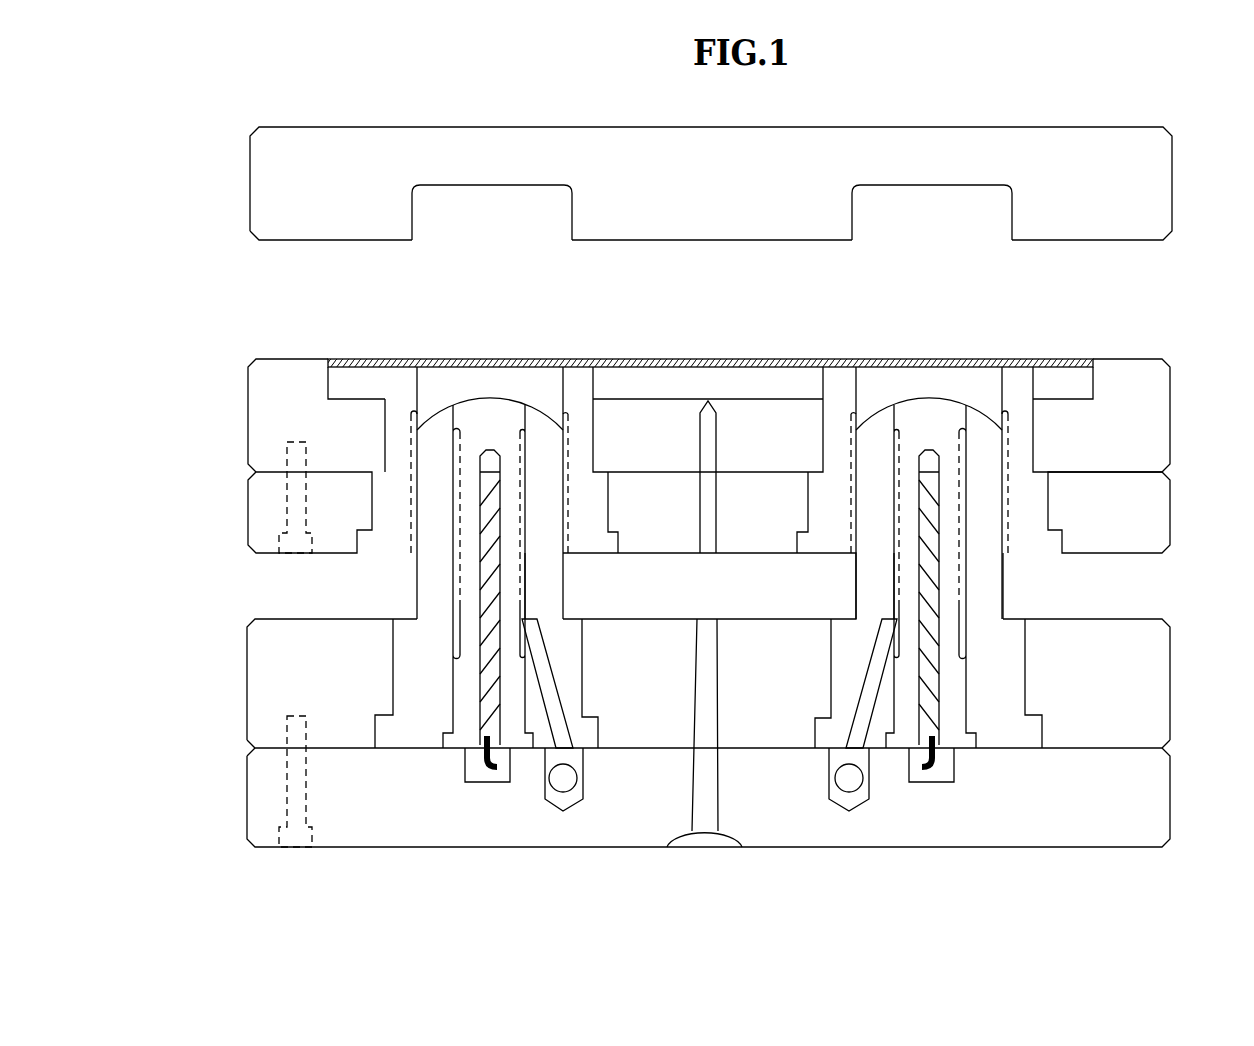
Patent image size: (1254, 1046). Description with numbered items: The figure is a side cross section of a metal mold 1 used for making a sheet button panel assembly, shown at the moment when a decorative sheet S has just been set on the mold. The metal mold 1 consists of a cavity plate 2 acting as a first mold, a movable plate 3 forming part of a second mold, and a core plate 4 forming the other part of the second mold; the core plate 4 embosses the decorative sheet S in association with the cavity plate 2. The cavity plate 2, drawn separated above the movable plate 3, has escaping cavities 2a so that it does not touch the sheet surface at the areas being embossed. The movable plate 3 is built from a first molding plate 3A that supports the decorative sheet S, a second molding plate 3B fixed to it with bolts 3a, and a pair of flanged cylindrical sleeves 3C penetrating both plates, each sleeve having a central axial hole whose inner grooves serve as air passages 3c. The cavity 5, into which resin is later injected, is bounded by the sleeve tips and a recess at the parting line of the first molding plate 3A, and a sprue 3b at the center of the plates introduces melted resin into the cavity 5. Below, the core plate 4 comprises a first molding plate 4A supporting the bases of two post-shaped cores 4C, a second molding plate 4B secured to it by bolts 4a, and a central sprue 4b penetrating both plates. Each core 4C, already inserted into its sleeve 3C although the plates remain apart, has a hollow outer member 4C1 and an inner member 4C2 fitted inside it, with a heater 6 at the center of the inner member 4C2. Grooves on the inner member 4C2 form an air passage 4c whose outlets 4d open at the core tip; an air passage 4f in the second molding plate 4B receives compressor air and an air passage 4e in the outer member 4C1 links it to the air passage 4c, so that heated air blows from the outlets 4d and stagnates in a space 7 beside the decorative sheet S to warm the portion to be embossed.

The metal mold 1 is at (1178, 207).
The cavity plate 2 is at (249, 191).
The escaping cavities 2a is at (414, 224).
The movable plate 3 is at (248, 444).
The first molding plate 3A is at (248, 401).
The second molding plate 3B is at (248, 497).
The sleeve 3C is at (418, 385).
The bolts 3a is at (280, 538).
The sprue 3b is at (716, 440).
The air passages 3c is at (563, 395).
The core plate 4 is at (247, 688).
The first molding plate 4A is at (247, 643).
The second molding plate 4B is at (247, 790).
The core 4C is at (417, 592).
The outer member 4C1 is at (598, 735).
The inner member 4C2 is at (452, 750).
The bolts 4a is at (293, 847).
The sprue 4b is at (718, 650).
The air passage 4c is at (525, 588).
The outlets 4d is at (527, 405).
The air passage 4e is at (548, 682).
The air passage 4f is at (568, 808).
The cavity 5 is at (350, 386).
The heater 6 is at (480, 684).
The space 7 is at (455, 385).
The decorative sheet S is at (1055, 375).